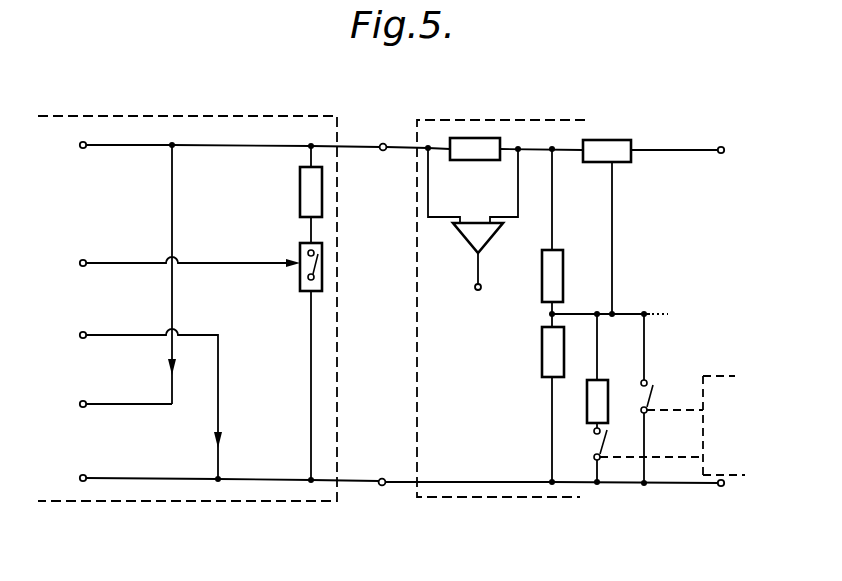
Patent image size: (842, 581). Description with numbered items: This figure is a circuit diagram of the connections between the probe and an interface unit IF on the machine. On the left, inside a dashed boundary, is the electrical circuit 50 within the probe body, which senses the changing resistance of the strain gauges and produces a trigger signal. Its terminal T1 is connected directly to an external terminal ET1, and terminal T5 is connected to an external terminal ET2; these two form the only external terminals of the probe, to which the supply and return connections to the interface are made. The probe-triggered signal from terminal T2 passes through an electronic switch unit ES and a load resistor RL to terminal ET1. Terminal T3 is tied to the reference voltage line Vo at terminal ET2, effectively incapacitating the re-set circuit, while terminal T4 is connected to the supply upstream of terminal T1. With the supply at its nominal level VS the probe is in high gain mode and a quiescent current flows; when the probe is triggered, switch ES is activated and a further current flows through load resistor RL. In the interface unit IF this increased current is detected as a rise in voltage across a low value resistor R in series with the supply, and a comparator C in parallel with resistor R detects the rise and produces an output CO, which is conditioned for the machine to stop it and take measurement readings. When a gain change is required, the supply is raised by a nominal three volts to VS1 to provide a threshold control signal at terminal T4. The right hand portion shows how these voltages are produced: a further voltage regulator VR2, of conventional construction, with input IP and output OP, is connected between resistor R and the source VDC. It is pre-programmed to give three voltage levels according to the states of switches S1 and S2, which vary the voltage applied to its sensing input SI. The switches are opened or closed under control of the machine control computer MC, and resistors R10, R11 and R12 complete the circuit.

The electrical circuit 50 is at (147, 503).
The interface unit IF is at (528, 499).
The terminal T1 is at (68, 146).
The terminal T2 is at (175, 264).
The terminal T3 is at (136, 404).
The terminal T4 is at (111, 405).
The terminal T5 is at (68, 479).
The nominal supply voltage VS is at (127, 148).
The increased supply voltage VS1 is at (175, 216).
The reference voltage line Vo is at (92, 477).
The load resistor RL is at (298, 192).
The electronic switch unit ES is at (298, 281).
The external terminal ET1 is at (387, 144).
The external terminal ET2 is at (382, 486).
The low value resistor R is at (488, 161).
The comparator C is at (472, 240).
The comparator output CO is at (472, 277).
The resistor R10 is at (564, 289).
The resistor R11 is at (541, 365).
The resistor R12 is at (585, 405).
The switch S1 is at (594, 452).
The switch S2 is at (650, 391).
The machine control computer MC is at (672, 425).
The further voltage regulator VR2 is at (607, 139).
The regulator output OP is at (588, 139).
The regulator input IP is at (637, 148).
The sensing input SI is at (620, 163).
The DC voltage source VDC is at (733, 138).